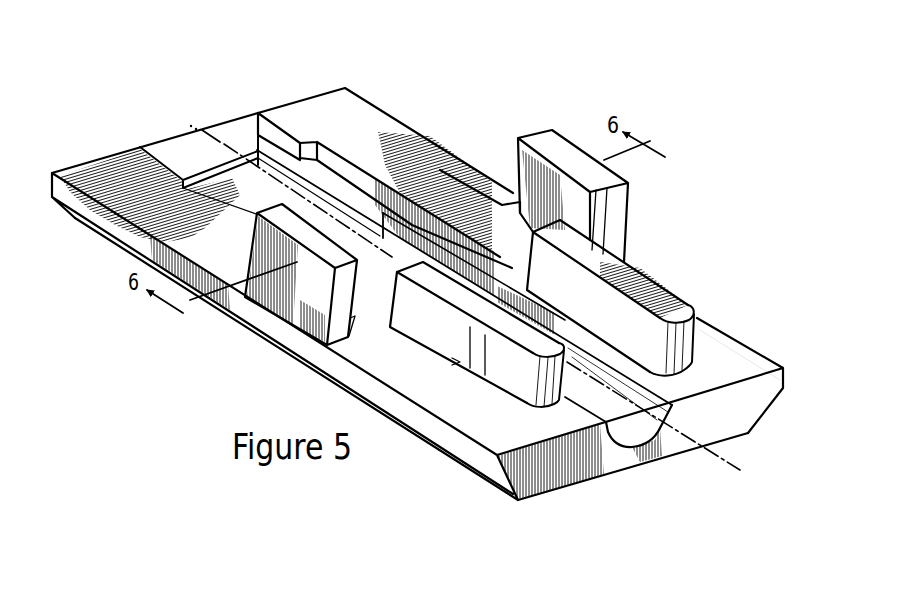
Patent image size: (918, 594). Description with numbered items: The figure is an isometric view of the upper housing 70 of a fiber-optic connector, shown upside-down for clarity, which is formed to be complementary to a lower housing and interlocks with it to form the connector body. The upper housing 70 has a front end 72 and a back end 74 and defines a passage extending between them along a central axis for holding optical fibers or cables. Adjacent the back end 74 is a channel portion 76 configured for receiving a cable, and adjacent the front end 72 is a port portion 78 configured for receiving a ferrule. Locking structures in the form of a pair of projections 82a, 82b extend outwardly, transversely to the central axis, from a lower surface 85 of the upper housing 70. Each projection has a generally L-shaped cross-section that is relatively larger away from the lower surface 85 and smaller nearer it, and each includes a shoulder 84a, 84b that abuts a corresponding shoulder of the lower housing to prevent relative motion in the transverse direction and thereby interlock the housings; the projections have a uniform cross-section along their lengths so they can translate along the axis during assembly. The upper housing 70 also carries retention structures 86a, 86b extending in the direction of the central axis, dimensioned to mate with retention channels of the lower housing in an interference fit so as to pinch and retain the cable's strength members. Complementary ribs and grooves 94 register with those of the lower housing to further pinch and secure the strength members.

The upper housing 70 is at (758, 395).
The front end 72 is at (257, 101).
The back end 74 is at (546, 508).
The channel portion 76 is at (640, 432).
The port portion 78 is at (234, 130).
The projection 82a is at (553, 143).
The projection 82b is at (297, 305).
The shoulder 84a is at (598, 212).
The shoulder 84b is at (345, 293).
The lower surface 85 is at (732, 357).
The retention structure 86a is at (718, 302).
The retention structure 86b is at (573, 390).
The complementary ribs and grooves 94 is at (487, 377).